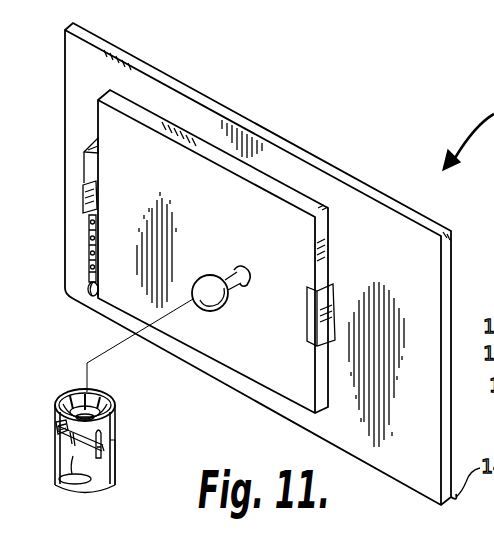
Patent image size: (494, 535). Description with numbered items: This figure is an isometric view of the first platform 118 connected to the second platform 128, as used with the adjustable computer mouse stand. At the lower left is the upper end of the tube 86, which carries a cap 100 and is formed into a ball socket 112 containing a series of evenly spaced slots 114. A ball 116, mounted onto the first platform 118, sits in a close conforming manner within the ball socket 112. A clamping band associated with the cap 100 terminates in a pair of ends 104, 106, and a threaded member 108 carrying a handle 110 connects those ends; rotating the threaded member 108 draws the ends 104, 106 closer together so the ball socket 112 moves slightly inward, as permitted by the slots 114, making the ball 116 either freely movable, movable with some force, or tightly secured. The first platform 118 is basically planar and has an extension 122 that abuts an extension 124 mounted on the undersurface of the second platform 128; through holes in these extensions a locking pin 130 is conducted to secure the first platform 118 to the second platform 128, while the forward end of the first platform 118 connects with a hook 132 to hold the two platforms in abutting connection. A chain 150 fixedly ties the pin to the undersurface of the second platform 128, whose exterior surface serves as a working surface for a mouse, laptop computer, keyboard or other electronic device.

The tube 86 is at (117, 478).
The cap 100 is at (115, 425).
The end of clamping band 104 is at (58, 428).
The end of clamping band 106 is at (60, 447).
The threaded member 108 is at (67, 484).
The handle 110 is at (101, 450).
The ball socket 112 is at (96, 390).
The slots 114 is at (68, 390).
The ball 116 is at (207, 312).
The first platform 118 is at (237, 113).
The extension 122 is at (83, 150).
The extension 124 is at (83, 195).
The second platform 128 is at (193, 80).
The locking pin 130 is at (89, 224).
The hook 132 is at (307, 312).
The chain 150 is at (88, 280).